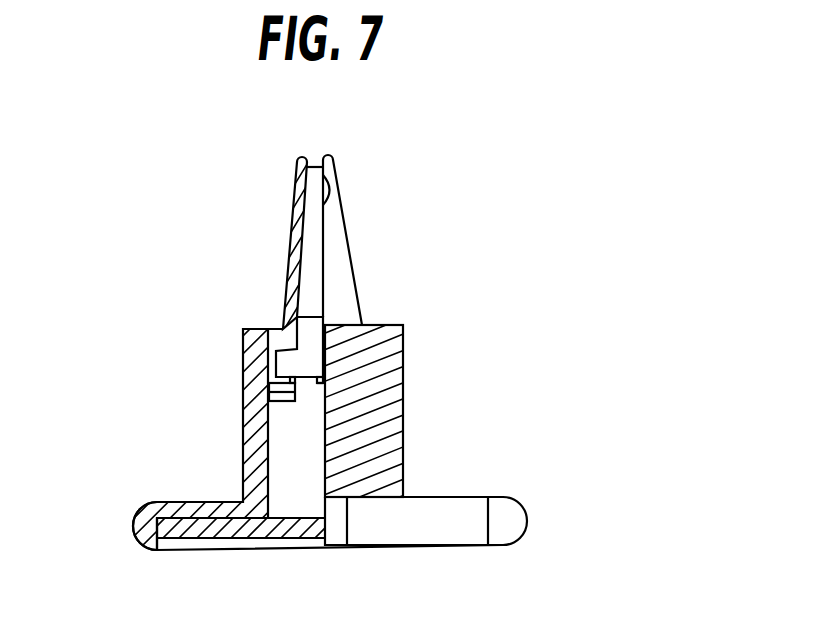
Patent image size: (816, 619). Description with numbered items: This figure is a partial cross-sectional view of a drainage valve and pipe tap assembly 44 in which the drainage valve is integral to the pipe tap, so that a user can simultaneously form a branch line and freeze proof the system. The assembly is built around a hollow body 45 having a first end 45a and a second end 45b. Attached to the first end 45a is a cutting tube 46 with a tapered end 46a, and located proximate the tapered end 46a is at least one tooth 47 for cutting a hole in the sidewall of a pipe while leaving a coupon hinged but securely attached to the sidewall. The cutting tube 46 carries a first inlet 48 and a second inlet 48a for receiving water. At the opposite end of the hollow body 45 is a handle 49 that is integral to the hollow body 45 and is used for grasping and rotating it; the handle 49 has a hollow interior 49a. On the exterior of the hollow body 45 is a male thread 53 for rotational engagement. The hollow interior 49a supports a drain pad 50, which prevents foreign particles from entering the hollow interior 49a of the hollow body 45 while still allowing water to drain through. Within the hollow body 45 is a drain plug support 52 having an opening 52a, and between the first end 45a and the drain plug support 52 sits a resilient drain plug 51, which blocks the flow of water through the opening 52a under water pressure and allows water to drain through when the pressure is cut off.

The drainage valve and pipe tap assembly 44 is at (436, 139).
The hollow body 45 is at (405, 365).
The first end 45a is at (282, 327).
The second end 45b is at (243, 502).
The cutting tube 46 is at (338, 258).
The tapered end 46a is at (337, 180).
The tooth 47 is at (333, 158).
The first inlet 48 is at (313, 157).
The second inlet 48a is at (325, 193).
The handle 49 is at (437, 527).
The hollow interior 49a is at (285, 537).
The drain pad 50 is at (147, 532).
The resilient drain plug 51 is at (293, 360).
The drain plug support 52 is at (293, 395).
The opening 52a is at (322, 385).
The male thread 53 is at (383, 457).